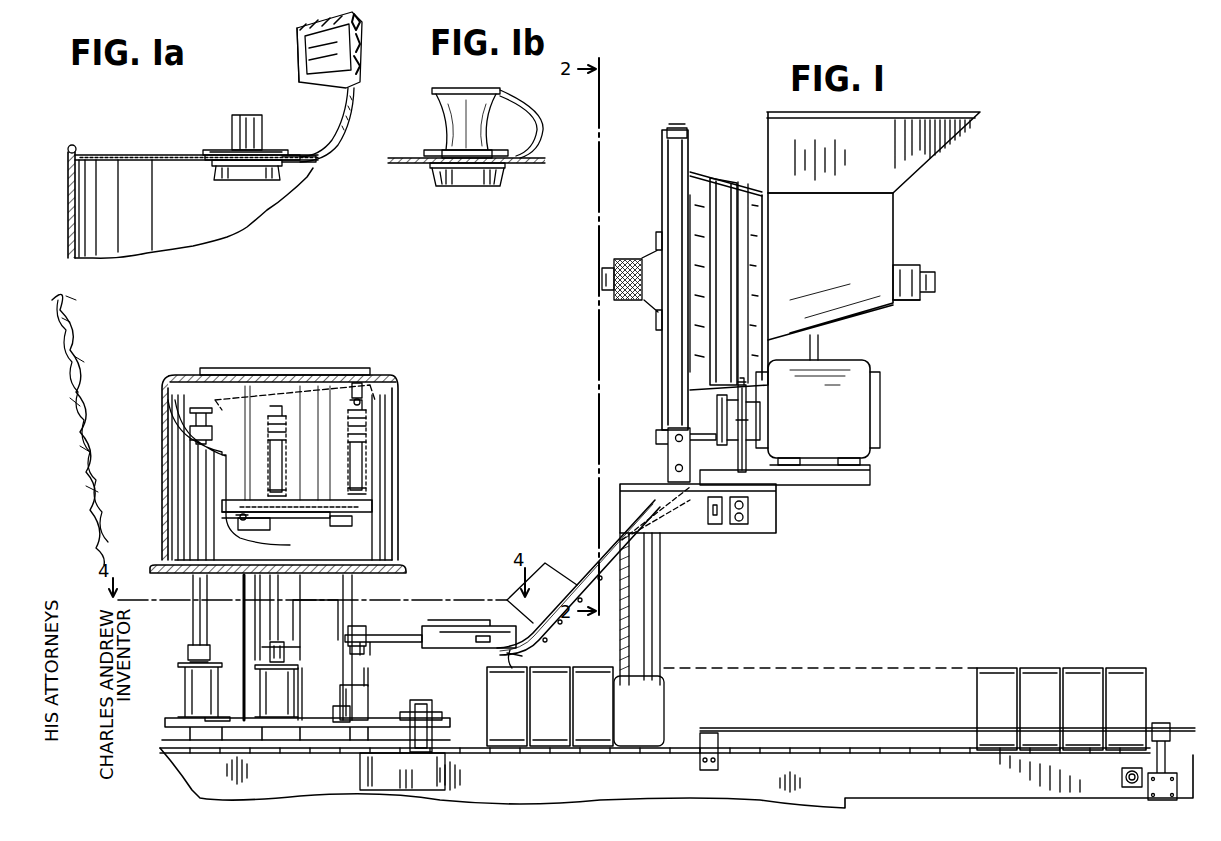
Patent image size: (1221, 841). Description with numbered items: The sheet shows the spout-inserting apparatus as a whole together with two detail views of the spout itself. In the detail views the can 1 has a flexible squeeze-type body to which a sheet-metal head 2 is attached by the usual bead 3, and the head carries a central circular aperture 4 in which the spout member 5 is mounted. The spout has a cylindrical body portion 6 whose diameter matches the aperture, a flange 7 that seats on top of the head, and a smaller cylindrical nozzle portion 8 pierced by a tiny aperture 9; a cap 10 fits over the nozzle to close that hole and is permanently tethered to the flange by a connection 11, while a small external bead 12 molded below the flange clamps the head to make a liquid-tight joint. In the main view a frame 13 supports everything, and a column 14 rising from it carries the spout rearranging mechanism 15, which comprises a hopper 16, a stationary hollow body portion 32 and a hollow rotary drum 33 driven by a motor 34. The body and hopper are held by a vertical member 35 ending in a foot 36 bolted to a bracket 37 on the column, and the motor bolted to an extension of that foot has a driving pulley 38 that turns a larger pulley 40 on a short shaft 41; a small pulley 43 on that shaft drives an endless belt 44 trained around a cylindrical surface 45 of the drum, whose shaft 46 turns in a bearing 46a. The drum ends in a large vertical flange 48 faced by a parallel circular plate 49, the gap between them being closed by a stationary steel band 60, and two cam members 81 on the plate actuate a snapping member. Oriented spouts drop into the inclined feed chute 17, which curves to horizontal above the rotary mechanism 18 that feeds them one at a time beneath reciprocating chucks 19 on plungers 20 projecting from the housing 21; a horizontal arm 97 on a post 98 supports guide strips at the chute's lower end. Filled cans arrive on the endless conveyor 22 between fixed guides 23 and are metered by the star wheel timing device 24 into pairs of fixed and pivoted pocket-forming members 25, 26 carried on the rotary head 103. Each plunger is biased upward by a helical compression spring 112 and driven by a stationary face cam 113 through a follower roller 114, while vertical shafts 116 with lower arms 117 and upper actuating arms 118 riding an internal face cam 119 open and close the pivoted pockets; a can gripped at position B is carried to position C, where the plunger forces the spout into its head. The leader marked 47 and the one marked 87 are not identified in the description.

In FIG. 1A, the can 1 is at (68, 232).
In FIG. 1, the can 1 is at (580, 681).
In FIG. 1A, the head 2 is at (118, 155).
In FIG. 1B, the head 2 is at (520, 164).
In FIG. 1A, the bead 3 is at (75, 149).
In FIG. 1A, the aperture 4 is at (212, 166).
In FIG. 1A, the spout member 5 is at (250, 145).
In FIG. 1B, the spout member 5 is at (432, 143).
In FIG. 1A, the body portion 6 is at (278, 172).
In FIG. 1B, the body portion 6 is at (470, 182).
In FIG. 1A, the flange 7 is at (203, 153).
In FIG. 1B, the flange 7 is at (424, 153).
In FIG. 1A, the nozzle portion 8 is at (262, 120).
In FIG. 1A, the aperture 9 is at (240, 118).
In FIG. 1A, the cap 10 is at (358, 50).
In FIG. 1B, the cap 10 is at (458, 88).
In FIG. 1A, the connection 11 is at (340, 121).
In FIG. 1B, the connection 11 is at (538, 127).
In FIG. 1A, the bead 12 is at (292, 164).
In FIG. 1B, the bead 12 is at (432, 165).
In FIG. 1, the frame 13 is at (848, 805).
In FIG. 1, the column 14 is at (648, 576).
In FIG. 1, the spout rearranging mechanism 15 is at (753, 157).
In FIG. 1, the hopper 16 is at (916, 130).
In FIG. 1, the feed chute 17 is at (594, 560).
In FIG. 1, the rotary mechanism 18 is at (447, 612).
In FIG. 1, the chuck 19 is at (188, 647).
In FIG. 1, the plunger 20 is at (194, 606).
In FIG. 1, the housing 21 is at (390, 441).
In FIG. 1, the endless conveyor 22 is at (808, 746).
In FIG. 1, the guides 23 is at (932, 727).
In FIG. 1, the star wheel timing device 24 is at (444, 741).
In FIG. 1, the fixed pocket-forming member 25 is at (302, 679).
In FIG. 1, the pivoted pocket-forming member 26 is at (258, 691).
In FIG. 1, the stationary hollow body portion 32 is at (893, 216).
In FIG. 1, the rotary drum 33 is at (745, 195).
In FIG. 1, the driving motor 34 is at (852, 373).
In FIG. 1, the vertical member 35 is at (818, 343).
In FIG. 1, the foot 36 is at (799, 483).
In FIG. 1, the bracket 37 is at (666, 531).
In FIG. 1, the driving pulley 38 is at (748, 395).
In FIG. 1, the larger pulley 40 is at (736, 463).
In FIG. 1, the short shaft 41 is at (700, 441).
In FIG. 1, the small pulley 43 is at (718, 423).
In FIG. 1, the endless belt 44 is at (738, 389).
In FIG. 1, the cylindrical surface 45 is at (722, 178).
In FIG. 1, the shaft 46 is at (603, 275).
In FIG. 1, the bearing 46a is at (909, 297).
In FIG. 1, the drum body 47 is at (770, 257).
In FIG. 1, the vertical flange 48 is at (688, 136).
In FIG. 1, the circular plate 49 is at (662, 152).
In FIG. 1, the stationary steel band 60 is at (678, 222).
In FIG. 1, the cam members 81 is at (656, 241).
In FIG. 1, the chute guide 87 is at (558, 570).
In FIG. 1, the horizontal arm 97 is at (458, 626).
In FIG. 1, the post 98 is at (520, 656).
In FIG. 1, the rotary head 103 is at (318, 481).
In FIG. 1, the helical compression spring 112 is at (284, 433).
In FIG. 1, the stationary face cam 113 is at (240, 412).
In FIG. 1, the follower roller 114 is at (362, 397).
In FIG. 1, the vertical shaft 116 is at (344, 615).
In FIG. 1, the arm 117 is at (336, 711).
In FIG. 1, the actuating arm 118 is at (256, 530).
In FIG. 1, the internal face cam 119 is at (288, 514).
In FIG. 1, the can position B is at (276, 691).
In FIG. 1, the can position C is at (178, 685).